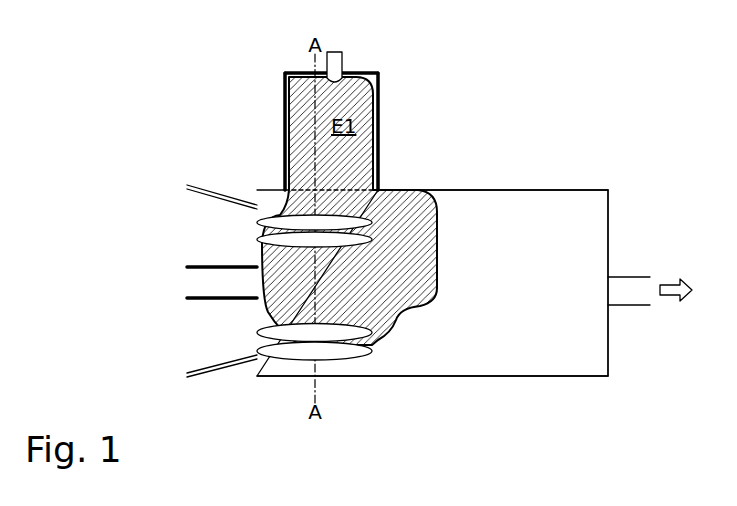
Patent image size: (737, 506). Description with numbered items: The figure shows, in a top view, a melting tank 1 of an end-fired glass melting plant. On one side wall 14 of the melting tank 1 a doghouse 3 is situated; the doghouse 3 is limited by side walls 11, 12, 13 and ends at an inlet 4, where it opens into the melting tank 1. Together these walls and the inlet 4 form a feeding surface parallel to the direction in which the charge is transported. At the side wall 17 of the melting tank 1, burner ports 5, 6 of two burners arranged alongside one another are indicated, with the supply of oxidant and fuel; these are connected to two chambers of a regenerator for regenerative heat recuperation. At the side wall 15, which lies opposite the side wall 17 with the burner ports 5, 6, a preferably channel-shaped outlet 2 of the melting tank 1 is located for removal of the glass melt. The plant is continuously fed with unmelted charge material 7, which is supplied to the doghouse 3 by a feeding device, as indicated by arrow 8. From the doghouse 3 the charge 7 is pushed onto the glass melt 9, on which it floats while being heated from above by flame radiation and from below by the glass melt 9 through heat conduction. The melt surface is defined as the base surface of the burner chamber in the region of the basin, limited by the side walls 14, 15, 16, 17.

The melting tank 1 is at (605, 184).
The outlet 2 is at (609, 290).
The doghouse 3 is at (276, 83).
The inlet 4 is at (330, 190).
The burner port 5 is at (257, 222).
The burner port 6 is at (264, 332).
The charge material 7 is at (378, 318).
The arrow 8 is at (336, 64).
The glass melt 9 is at (518, 228).
The side wall of the doghouse 11 is at (283, 127).
The side wall of the doghouse 12 is at (295, 72).
The side wall of the doghouse 13 is at (380, 100).
The side wall of the melting tank 14 is at (495, 190).
The side wall of the melting tank 15 is at (609, 213).
The side wall of the melting tank 16 is at (530, 376).
The side wall of the melting tank 17 is at (257, 368).